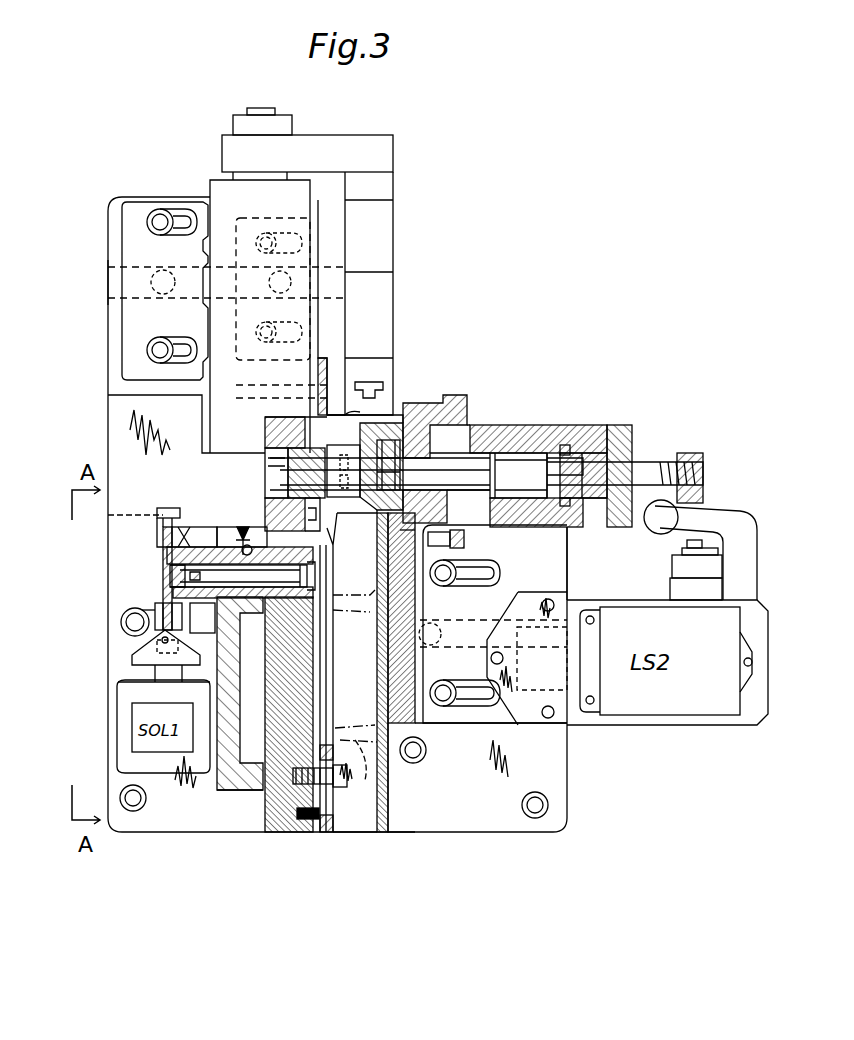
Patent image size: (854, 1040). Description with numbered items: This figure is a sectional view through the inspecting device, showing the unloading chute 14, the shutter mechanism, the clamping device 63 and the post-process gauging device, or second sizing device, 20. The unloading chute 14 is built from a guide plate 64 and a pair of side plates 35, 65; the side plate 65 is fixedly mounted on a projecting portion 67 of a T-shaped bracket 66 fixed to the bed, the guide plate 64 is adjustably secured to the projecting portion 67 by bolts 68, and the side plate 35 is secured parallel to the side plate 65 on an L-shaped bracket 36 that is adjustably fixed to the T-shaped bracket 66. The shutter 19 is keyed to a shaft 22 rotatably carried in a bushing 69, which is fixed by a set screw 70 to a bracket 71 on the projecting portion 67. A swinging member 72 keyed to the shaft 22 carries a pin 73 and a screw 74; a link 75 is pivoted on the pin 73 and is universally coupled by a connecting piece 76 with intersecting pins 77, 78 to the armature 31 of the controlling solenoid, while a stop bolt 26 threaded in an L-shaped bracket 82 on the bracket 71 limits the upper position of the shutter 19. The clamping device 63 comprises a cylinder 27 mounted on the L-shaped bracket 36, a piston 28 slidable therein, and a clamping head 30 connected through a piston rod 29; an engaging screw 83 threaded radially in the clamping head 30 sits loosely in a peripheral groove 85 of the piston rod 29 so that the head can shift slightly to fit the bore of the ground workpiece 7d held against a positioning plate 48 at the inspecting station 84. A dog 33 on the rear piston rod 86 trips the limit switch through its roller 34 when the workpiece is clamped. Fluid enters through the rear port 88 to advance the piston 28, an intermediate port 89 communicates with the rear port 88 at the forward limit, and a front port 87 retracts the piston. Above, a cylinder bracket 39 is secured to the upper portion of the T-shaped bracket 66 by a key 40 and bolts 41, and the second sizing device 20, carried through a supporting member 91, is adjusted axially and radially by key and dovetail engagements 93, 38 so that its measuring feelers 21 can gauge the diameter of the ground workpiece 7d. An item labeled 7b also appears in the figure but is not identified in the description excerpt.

The slide plate 7b is at (385, 740).
The ground workpiece 7d is at (385, 430).
The unloading chute 14 is at (378, 838).
The shutter 19 is at (338, 597).
The second sizing device 20 is at (393, 275).
The measuring feelers 21 is at (380, 415).
The shaft 22 is at (165, 565).
The stop bolt 26 is at (160, 512).
The cylinder 27 is at (580, 430).
The piston 28 is at (525, 455).
The piston rod 29 is at (460, 455).
The clamping head 30 is at (343, 474).
The armature 31 is at (160, 675).
The dog 33 is at (703, 490).
The roller 34 is at (658, 528).
The side plate 35 is at (395, 790).
The L-shaped bracket 36 is at (423, 710).
The dovetail engagement 38 is at (362, 412).
The cylinder bracket 39 is at (125, 330).
The key 40 is at (128, 275).
The bolts 41 is at (160, 209).
The positioning plate 48 is at (265, 470).
The clamping device 63 is at (629, 425).
The guide plate 64 is at (327, 832).
The side plate 65 is at (318, 832).
The T-shaped bracket 66 is at (162, 828).
The projecting portion 67 is at (285, 832).
The bolts 68 is at (340, 835).
The bushing 69 is at (205, 548).
The set screw 70 is at (245, 527).
The bracket 71 is at (240, 790).
The swinging member 72 is at (158, 540).
The pin 73 is at (117, 511).
The screw 74 is at (245, 690).
The link 75 is at (165, 575).
The connecting piece 76 is at (120, 622).
The pin 77 is at (152, 612).
The pin 78 is at (160, 645).
The L-shaped bracket 82 is at (200, 530).
The engaging screw 83 is at (395, 445).
The inspecting station 84 is at (361, 535).
The peripheral groove 85 is at (462, 460).
The rear piston rod 86 is at (655, 470).
The front port 87 is at (530, 548).
The rear port 88 is at (578, 530).
The intermediate port 89 is at (565, 450).
The supporting member 91 is at (390, 162).
The key engagement 93 is at (99, 273).